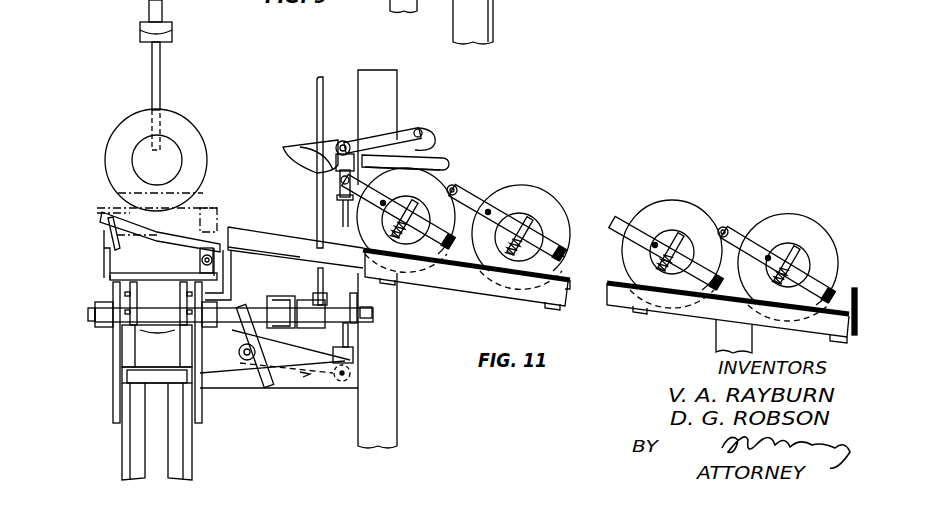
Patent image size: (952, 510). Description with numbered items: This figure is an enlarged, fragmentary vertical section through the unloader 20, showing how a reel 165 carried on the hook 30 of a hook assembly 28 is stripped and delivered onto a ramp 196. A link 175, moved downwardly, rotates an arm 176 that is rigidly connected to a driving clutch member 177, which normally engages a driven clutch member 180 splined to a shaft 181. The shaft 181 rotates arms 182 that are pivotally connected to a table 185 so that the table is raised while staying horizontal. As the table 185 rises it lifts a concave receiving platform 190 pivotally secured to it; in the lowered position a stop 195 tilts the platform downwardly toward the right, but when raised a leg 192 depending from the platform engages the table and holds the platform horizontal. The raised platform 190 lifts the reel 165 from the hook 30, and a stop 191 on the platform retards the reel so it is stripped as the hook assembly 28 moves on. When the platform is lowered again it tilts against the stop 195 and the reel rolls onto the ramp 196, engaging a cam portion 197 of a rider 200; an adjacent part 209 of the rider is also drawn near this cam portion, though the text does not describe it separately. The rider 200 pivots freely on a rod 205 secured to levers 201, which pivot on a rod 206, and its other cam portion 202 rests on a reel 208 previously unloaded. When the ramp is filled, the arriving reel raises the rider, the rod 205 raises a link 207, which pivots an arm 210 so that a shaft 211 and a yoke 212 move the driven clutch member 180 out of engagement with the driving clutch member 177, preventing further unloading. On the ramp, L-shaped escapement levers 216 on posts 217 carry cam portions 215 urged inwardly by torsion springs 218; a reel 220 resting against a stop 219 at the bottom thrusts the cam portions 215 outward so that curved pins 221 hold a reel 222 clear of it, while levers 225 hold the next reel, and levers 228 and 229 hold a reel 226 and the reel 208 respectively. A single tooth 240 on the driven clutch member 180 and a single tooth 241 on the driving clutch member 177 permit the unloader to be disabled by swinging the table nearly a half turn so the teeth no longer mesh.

The unloader 20 is at (403, 108).
The hook assembly 28 is at (139, 11).
The hook 30 is at (152, 70).
The reel 165 is at (172, 116).
The link 175 is at (318, 86).
The arm 176 is at (312, 296).
The driving clutch member 177 is at (290, 328).
The driven clutch member 180 is at (278, 296).
The shaft 181 is at (222, 304).
The arms 182 is at (140, 330).
The table 185 is at (123, 272).
The concave receiving platform 190 is at (214, 210).
The stop 191 is at (205, 206).
The leg 192 is at (103, 228).
The stop 195 is at (104, 258).
The ramp 196 is at (472, 288).
The cam portion 197 is at (290, 147).
The rider 200 is at (442, 155).
The levers 201 is at (407, 132).
The cam portion 202 is at (447, 168).
The rod 205 is at (345, 140).
The rod 206 is at (432, 137).
The link 207 is at (335, 196).
The reel 208 is at (456, 186).
The jaw tongue 209 is at (330, 145).
The arm 210 is at (305, 390).
The shaft 211 is at (246, 362).
The yoke 212 is at (270, 392).
The cam portions 215 is at (806, 255).
The L-shaped escapement levers 216 is at (779, 242).
The posts 217 is at (786, 240).
The torsion springs 218 is at (784, 326).
The stop 219 is at (854, 286).
The reel 220 is at (790, 250).
The curved pins 221 is at (725, 226).
The reel 222 is at (680, 205).
The escapement levers 225 is at (626, 220).
The reel 226 is at (538, 195).
The lever 228 is at (565, 252).
The lever 229 is at (444, 284).
The tooth 240 is at (102, 328).
The tooth 241 is at (286, 345).